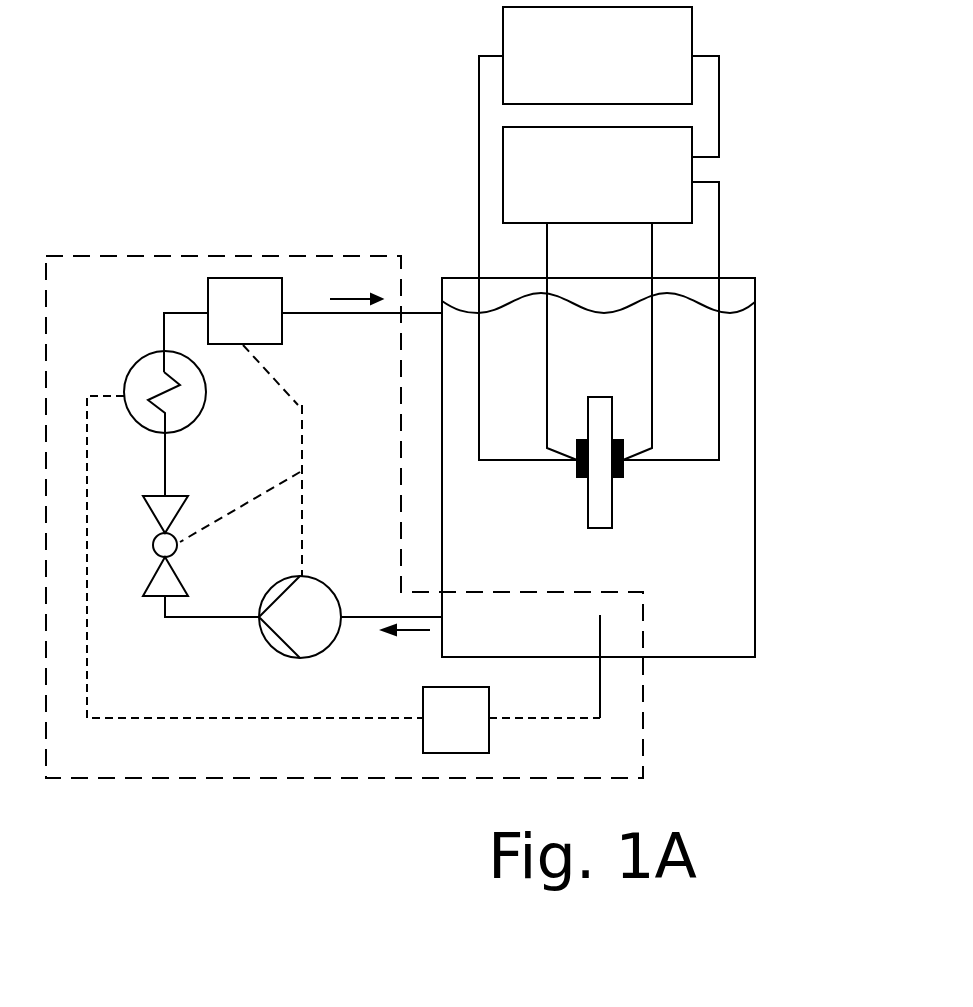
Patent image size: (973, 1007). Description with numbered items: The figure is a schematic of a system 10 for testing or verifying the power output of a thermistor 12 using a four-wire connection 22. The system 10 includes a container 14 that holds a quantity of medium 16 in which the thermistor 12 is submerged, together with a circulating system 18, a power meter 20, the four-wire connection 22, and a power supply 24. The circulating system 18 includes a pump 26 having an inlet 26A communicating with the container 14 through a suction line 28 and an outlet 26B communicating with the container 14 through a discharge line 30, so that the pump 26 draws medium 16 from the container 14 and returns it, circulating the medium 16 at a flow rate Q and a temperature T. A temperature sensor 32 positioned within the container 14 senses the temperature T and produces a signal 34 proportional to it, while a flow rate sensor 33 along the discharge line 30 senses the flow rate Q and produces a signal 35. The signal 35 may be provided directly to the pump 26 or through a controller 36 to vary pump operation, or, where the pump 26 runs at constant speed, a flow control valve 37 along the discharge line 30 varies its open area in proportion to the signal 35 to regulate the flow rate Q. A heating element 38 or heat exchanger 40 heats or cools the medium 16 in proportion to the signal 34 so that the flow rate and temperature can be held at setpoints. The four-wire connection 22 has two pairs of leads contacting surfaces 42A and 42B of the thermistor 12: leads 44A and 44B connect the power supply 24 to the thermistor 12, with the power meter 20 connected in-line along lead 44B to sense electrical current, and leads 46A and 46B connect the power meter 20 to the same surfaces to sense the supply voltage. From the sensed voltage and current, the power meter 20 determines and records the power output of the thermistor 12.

The system 10 is at (872, 176).
The thermistor 12 is at (634, 520).
The container 14 is at (755, 418).
The medium 16 is at (598, 328).
The circulating system 18 is at (160, 252).
The power meter 20 is at (597, 175).
The four-wire connection 22 is at (738, 346).
The power supply 24 is at (597, 55).
The pump 26 is at (300, 575).
The inlet 26A is at (340, 623).
The outlet 26B is at (265, 622).
The suction line 28 is at (378, 615).
The discharge line 30 is at (327, 315).
The temperature sensor 32 is at (600, 636).
The flow rate sensor 33 is at (245, 311).
The signal 34 is at (520, 720).
The signal 35 is at (302, 445).
The controller 36 is at (456, 720).
The flow control valve 37 is at (178, 540).
The heating element 38 is at (137, 370).
The heat exchanger 40 is at (130, 369).
The surface 42A is at (588, 503).
The surface 42B is at (612, 493).
The lead 44A is at (479, 223).
The lead 44B is at (719, 89).
The lead 46A is at (547, 268).
The lead 46B is at (685, 260).